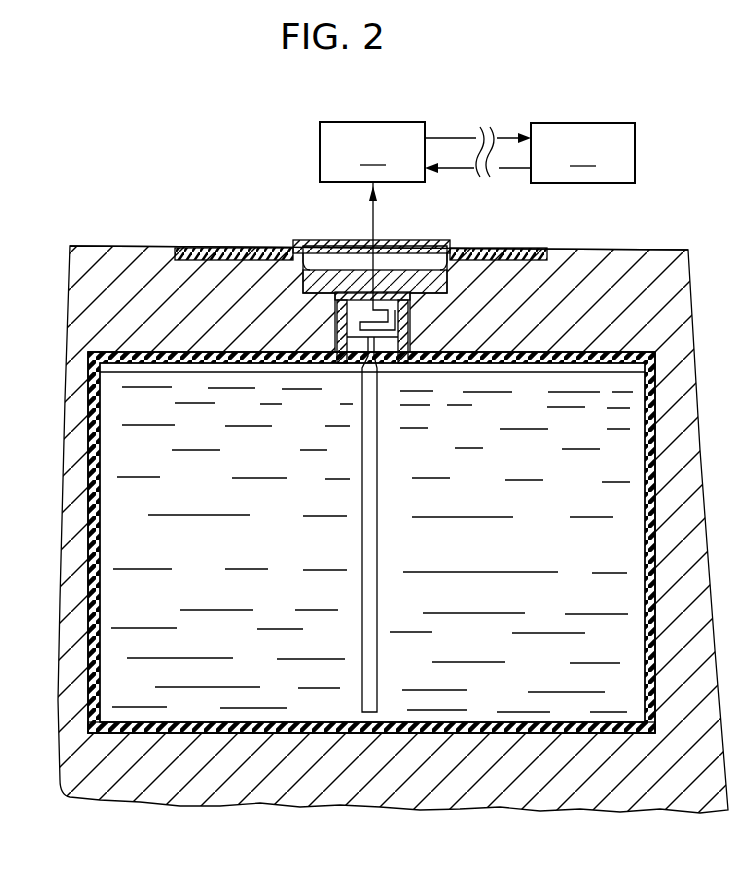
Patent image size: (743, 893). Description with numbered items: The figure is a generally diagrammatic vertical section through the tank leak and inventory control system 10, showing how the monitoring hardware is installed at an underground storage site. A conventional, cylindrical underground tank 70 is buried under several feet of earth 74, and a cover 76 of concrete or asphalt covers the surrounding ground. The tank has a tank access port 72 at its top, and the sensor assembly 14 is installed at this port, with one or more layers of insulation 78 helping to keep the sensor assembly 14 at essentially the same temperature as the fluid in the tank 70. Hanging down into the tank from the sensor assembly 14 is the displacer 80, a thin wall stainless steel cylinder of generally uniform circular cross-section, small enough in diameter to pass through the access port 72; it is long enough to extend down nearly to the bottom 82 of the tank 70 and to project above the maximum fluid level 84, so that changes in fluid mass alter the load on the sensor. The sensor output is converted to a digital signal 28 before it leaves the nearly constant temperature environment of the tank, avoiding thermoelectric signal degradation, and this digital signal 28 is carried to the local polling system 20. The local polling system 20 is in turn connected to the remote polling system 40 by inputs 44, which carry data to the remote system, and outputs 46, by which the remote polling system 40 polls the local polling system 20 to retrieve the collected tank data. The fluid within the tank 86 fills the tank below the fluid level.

The tank monitor and inventory control system 10 is at (262, 155).
The sensor assembly 14 is at (348, 385).
The local polling system 20 is at (372, 152).
The digital signal 28 is at (375, 226).
The remote polling system 40 is at (583, 153).
The inputs 44 is at (461, 137).
The outputs 46 is at (458, 166).
The underground tank 70 is at (168, 347).
The tank access port 72 is at (362, 284).
The earth 74 is at (640, 258).
The cover 76 is at (538, 249).
The insulation 78 is at (467, 248).
The displacer 80 is at (380, 457).
The bottom 82 is at (440, 732).
The maximum fluid level 84 is at (520, 373).
The liquid 86 is at (561, 496).